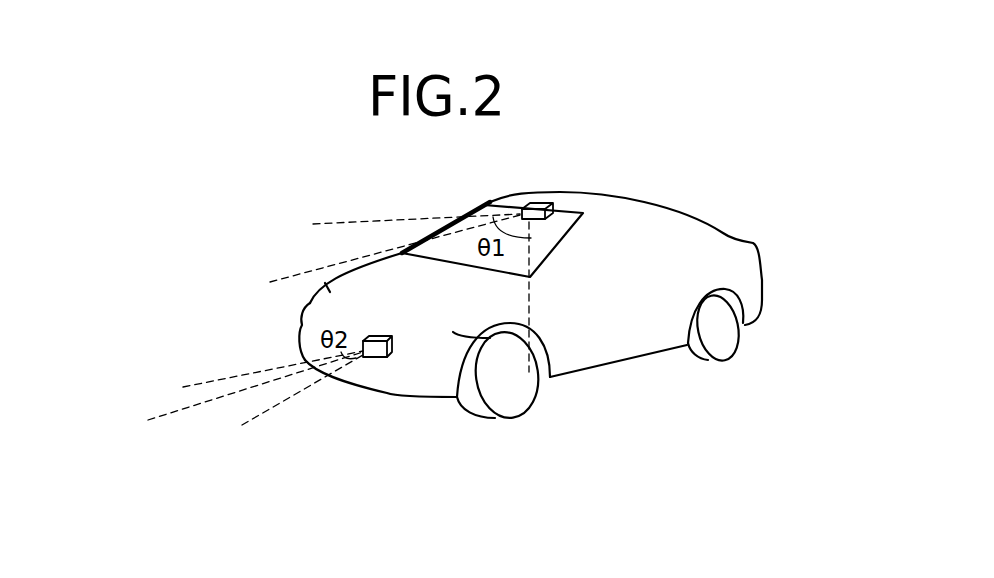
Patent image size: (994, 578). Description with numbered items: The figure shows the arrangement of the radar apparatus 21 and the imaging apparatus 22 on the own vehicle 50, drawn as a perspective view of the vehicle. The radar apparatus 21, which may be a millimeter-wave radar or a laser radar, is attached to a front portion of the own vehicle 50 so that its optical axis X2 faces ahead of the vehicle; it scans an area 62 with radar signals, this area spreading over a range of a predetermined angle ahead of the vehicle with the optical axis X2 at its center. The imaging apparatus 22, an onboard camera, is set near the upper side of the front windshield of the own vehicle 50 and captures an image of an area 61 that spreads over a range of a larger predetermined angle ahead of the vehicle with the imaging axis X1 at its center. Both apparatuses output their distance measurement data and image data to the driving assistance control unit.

The own vehicle 50 is at (658, 197).
The imaging apparatus 22 is at (540, 203).
The radar apparatus 21 is at (392, 349).
The area 61 is at (336, 223).
The area 62 is at (200, 382).
The imaging axis X1 is at (378, 256).
The optical axis X2 is at (235, 398).